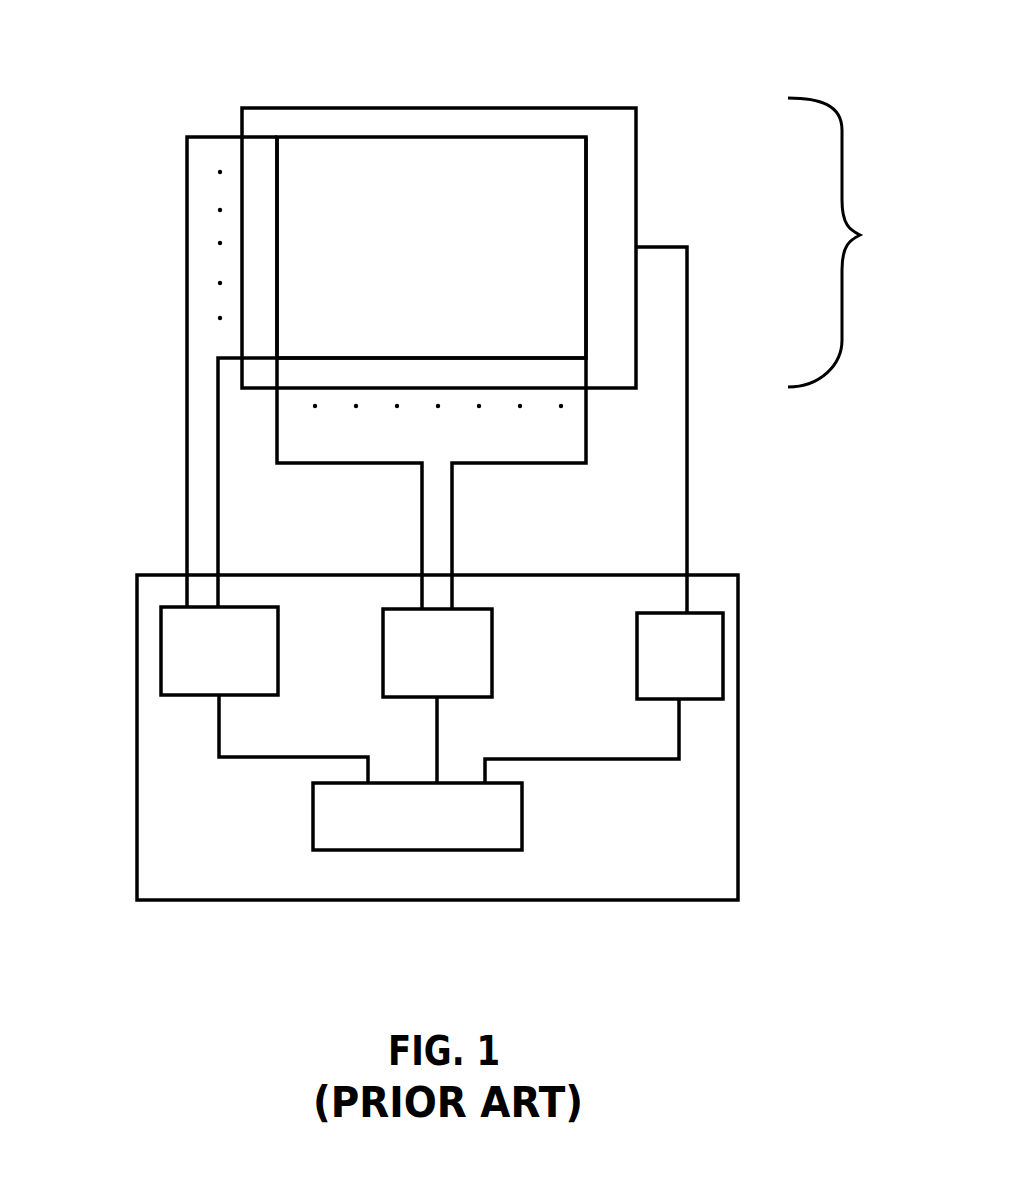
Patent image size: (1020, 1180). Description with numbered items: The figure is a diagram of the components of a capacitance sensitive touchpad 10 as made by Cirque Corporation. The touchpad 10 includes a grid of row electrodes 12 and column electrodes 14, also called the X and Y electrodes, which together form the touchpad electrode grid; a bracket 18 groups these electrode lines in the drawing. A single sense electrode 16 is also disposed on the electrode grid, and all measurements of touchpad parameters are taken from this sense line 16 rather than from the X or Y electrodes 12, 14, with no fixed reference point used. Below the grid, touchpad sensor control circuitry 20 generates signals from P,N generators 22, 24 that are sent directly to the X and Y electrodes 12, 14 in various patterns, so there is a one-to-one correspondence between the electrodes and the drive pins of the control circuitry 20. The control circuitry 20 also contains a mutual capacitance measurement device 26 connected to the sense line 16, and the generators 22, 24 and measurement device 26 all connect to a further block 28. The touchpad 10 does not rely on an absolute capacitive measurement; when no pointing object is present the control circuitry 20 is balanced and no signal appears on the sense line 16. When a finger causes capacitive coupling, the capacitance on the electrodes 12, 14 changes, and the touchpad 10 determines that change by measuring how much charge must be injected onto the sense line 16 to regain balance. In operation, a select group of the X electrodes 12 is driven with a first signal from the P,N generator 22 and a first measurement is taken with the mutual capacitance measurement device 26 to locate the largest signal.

The capacitance sensitive touchpad 10 is at (573, 97).
The row electrodes 12 is at (208, 352).
The column electrodes 14 is at (595, 490).
The sense electrode 16 is at (695, 273).
The electrode line group 18 is at (844, 242).
The touchpad sensor control circuitry 20 is at (738, 765).
The P,N generator 22 is at (160, 650).
The P,N generator 24 is at (492, 642).
The mutual capacitance measurement device 26 is at (637, 660).
The processor 28 is at (522, 820).